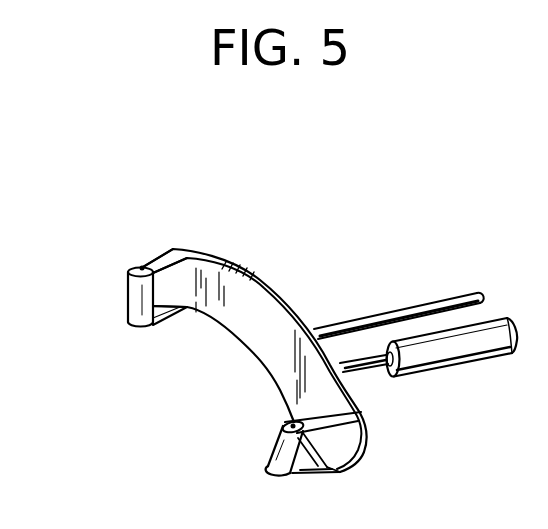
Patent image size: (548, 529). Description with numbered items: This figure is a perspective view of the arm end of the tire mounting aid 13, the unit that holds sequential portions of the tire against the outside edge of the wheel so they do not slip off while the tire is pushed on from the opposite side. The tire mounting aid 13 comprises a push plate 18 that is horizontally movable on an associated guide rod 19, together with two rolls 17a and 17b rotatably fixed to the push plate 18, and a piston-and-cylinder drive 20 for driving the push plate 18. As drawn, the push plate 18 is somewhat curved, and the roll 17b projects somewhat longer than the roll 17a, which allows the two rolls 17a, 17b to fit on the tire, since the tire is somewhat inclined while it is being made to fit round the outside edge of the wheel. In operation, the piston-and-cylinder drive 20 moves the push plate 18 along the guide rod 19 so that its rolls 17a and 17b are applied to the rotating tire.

The tire mounting aid 13 is at (313, 266).
The roll 17a is at (128, 306).
The roll 17b is at (272, 458).
The push plate 18 is at (272, 354).
The guide rod 19 is at (423, 307).
The piston-and-cylinder drive 20 is at (470, 348).